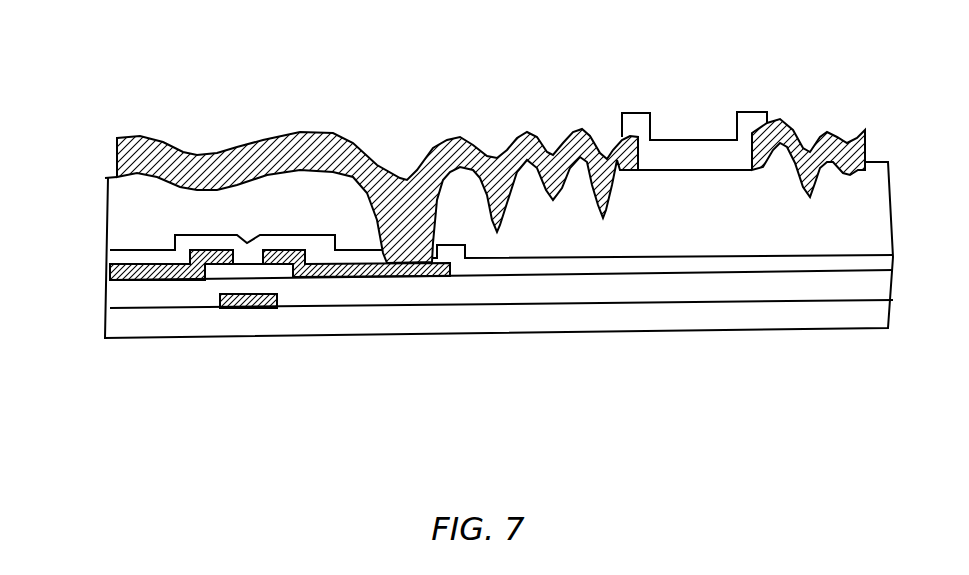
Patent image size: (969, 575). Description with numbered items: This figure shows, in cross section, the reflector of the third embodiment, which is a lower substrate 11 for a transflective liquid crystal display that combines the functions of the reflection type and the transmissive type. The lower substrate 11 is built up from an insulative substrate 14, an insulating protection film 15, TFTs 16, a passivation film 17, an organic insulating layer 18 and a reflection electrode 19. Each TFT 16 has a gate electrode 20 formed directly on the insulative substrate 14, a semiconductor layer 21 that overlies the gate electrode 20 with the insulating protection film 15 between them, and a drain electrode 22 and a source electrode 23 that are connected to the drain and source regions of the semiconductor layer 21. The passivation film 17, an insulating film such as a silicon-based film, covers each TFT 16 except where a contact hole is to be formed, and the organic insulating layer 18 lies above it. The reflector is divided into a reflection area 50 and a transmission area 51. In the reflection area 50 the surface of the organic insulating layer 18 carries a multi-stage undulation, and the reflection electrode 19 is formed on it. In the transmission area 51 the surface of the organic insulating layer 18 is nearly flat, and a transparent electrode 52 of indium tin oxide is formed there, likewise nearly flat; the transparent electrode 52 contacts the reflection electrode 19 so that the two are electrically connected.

The lower substrate 11 is at (93, 133).
The insulative substrate 14 is at (700, 312).
The insulating protection film 15 is at (832, 278).
The TFT 16 is at (117, 393).
The passivation film 17 is at (363, 258).
The organic insulating layer 18 is at (217, 208).
The reflection electrode 19 is at (420, 167).
The gate electrode 20 is at (241, 309).
The semiconductor layer 21 is at (227, 268).
The drain electrode 22 is at (137, 270).
The source electrode 23 is at (308, 279).
The reflection area 50 is at (628, 87).
The transmission area 51 is at (763, 87).
The transparent electrode 52 is at (693, 158).